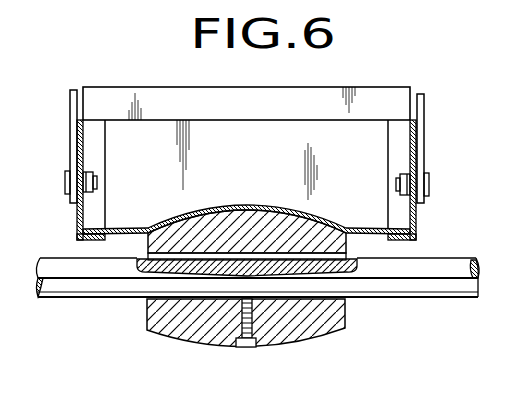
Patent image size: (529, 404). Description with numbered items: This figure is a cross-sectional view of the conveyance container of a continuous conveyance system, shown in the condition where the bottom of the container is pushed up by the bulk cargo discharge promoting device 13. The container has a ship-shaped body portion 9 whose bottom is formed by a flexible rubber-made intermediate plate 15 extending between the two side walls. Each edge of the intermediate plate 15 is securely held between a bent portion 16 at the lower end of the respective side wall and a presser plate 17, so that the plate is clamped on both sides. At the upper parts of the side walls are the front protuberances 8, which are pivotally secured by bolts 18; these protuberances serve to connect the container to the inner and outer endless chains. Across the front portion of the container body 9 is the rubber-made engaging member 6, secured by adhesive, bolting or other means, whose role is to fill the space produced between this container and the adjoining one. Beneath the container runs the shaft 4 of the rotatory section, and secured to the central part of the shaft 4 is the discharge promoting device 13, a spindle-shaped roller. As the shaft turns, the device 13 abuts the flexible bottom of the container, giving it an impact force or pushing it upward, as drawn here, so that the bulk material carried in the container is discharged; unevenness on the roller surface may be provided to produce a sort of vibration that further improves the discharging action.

The shaft 4 is at (447, 286).
The engaging member 6 is at (396, 87).
The front protuberance 8 is at (70, 128).
The body portion 9 is at (77, 215).
The cargo discharge promoting device 13 is at (164, 320).
The intermediate plate 15 is at (247, 205).
The bent portion 16 is at (79, 243).
The presser plate 17 is at (97, 232).
The bolt 18 is at (64, 173).